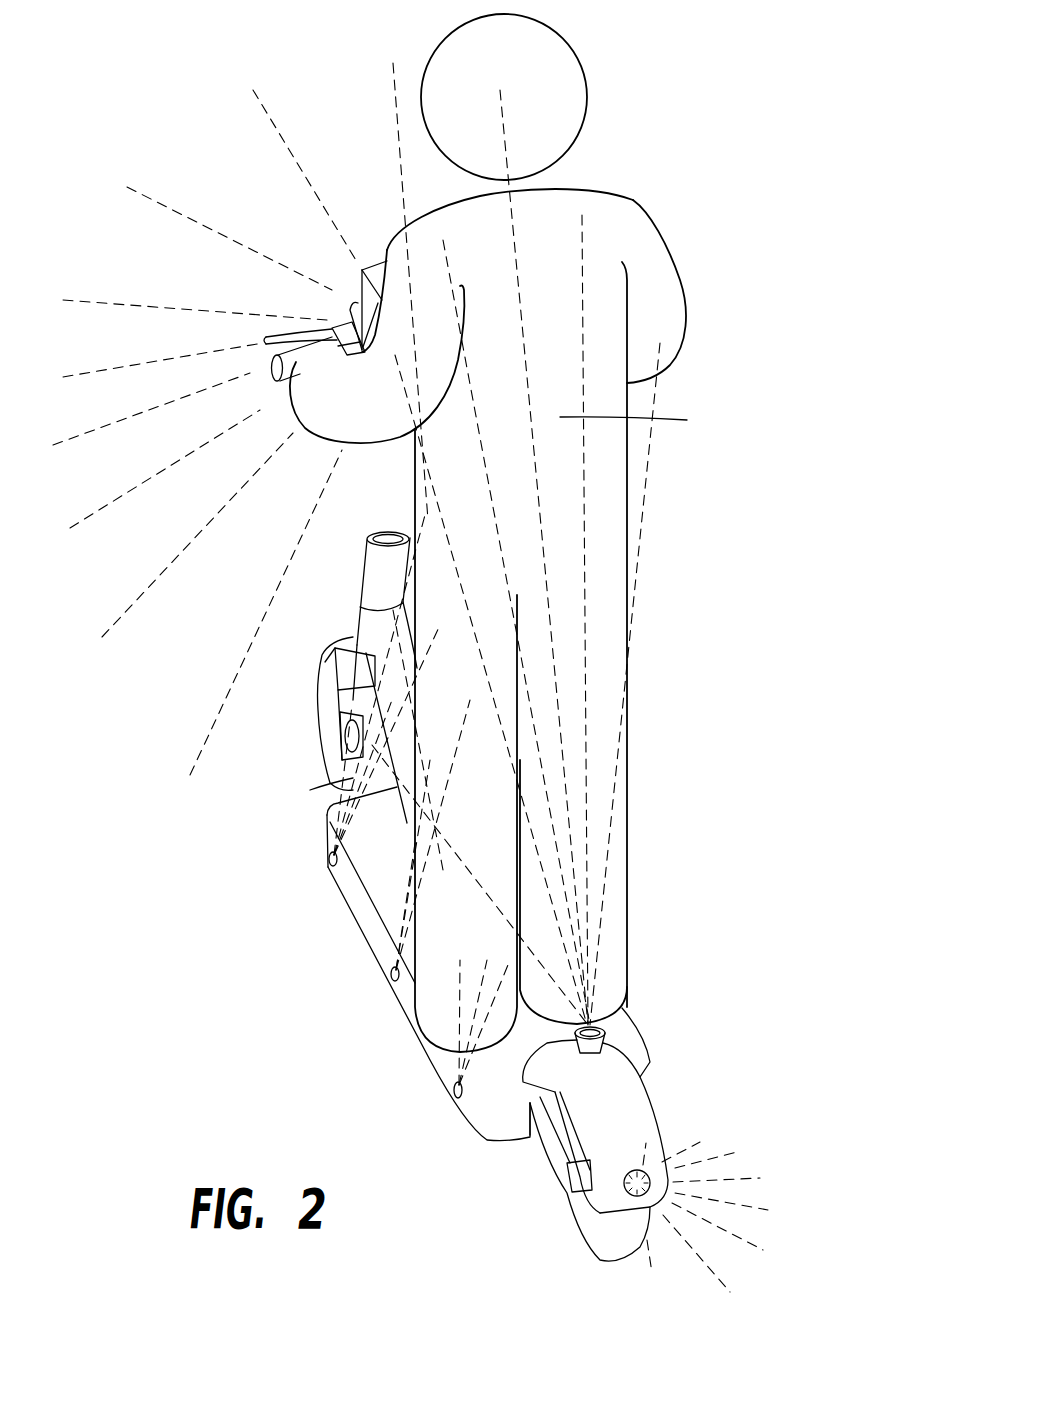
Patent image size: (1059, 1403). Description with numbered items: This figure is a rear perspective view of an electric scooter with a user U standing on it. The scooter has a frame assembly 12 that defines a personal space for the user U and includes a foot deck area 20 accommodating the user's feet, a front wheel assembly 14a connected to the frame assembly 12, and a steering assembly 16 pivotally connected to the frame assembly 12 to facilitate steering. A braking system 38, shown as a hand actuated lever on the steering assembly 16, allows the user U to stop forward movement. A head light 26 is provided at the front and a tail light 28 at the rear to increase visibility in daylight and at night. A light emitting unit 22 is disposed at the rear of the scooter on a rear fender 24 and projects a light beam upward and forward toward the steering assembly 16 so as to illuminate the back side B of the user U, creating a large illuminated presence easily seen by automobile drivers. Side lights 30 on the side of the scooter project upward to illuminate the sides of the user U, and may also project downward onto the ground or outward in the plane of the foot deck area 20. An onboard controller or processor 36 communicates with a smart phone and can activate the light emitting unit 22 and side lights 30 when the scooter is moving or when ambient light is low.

The frame assembly 12 is at (373, 575).
The front wheel assembly 14a is at (353, 775).
The steering assembly 16 is at (272, 380).
The foot deck area 20 is at (388, 878).
The light emitting unit 22 is at (603, 1052).
The rear fender 24 is at (640, 1123).
The head light 26 is at (357, 308).
The tail light 28 is at (648, 1175).
The side lights 30 is at (328, 860).
The onboard scooter controller or processor 36 is at (375, 273).
The braking system 38 is at (287, 340).
The user U is at (647, 214).
The back side B is at (630, 421).